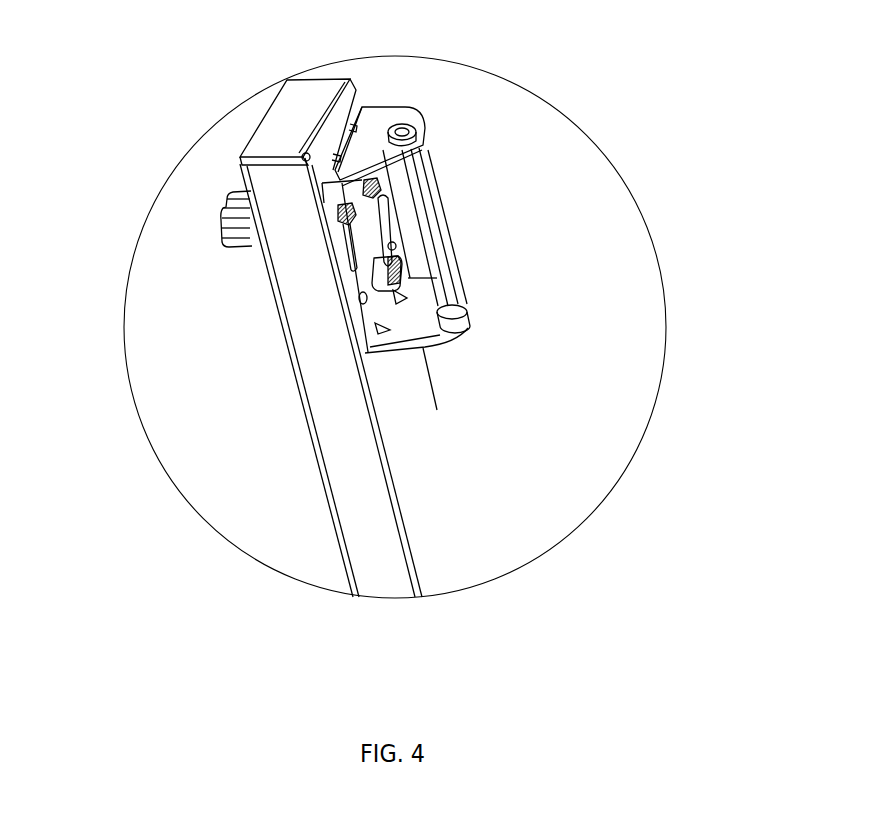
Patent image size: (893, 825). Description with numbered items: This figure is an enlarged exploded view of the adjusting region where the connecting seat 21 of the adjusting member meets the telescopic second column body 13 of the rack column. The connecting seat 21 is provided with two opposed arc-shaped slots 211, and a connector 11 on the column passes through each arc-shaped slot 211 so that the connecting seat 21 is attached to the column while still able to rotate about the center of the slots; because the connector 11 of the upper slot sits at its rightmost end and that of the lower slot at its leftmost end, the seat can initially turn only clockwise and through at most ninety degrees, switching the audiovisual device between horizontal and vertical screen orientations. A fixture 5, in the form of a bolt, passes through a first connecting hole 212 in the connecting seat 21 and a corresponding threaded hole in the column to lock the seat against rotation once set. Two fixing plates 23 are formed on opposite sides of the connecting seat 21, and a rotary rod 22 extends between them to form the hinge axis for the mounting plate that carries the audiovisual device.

The second column body 13 is at (358, 470).
The connector 11 is at (343, 178).
The fixture 5 is at (340, 212).
The connecting seat 21 is at (375, 312).
The arc-shaped slot 211 is at (350, 258).
The first connecting hole 212 is at (365, 297).
The rotary rod 22 is at (427, 223).
The fixing plate 23 is at (423, 313).